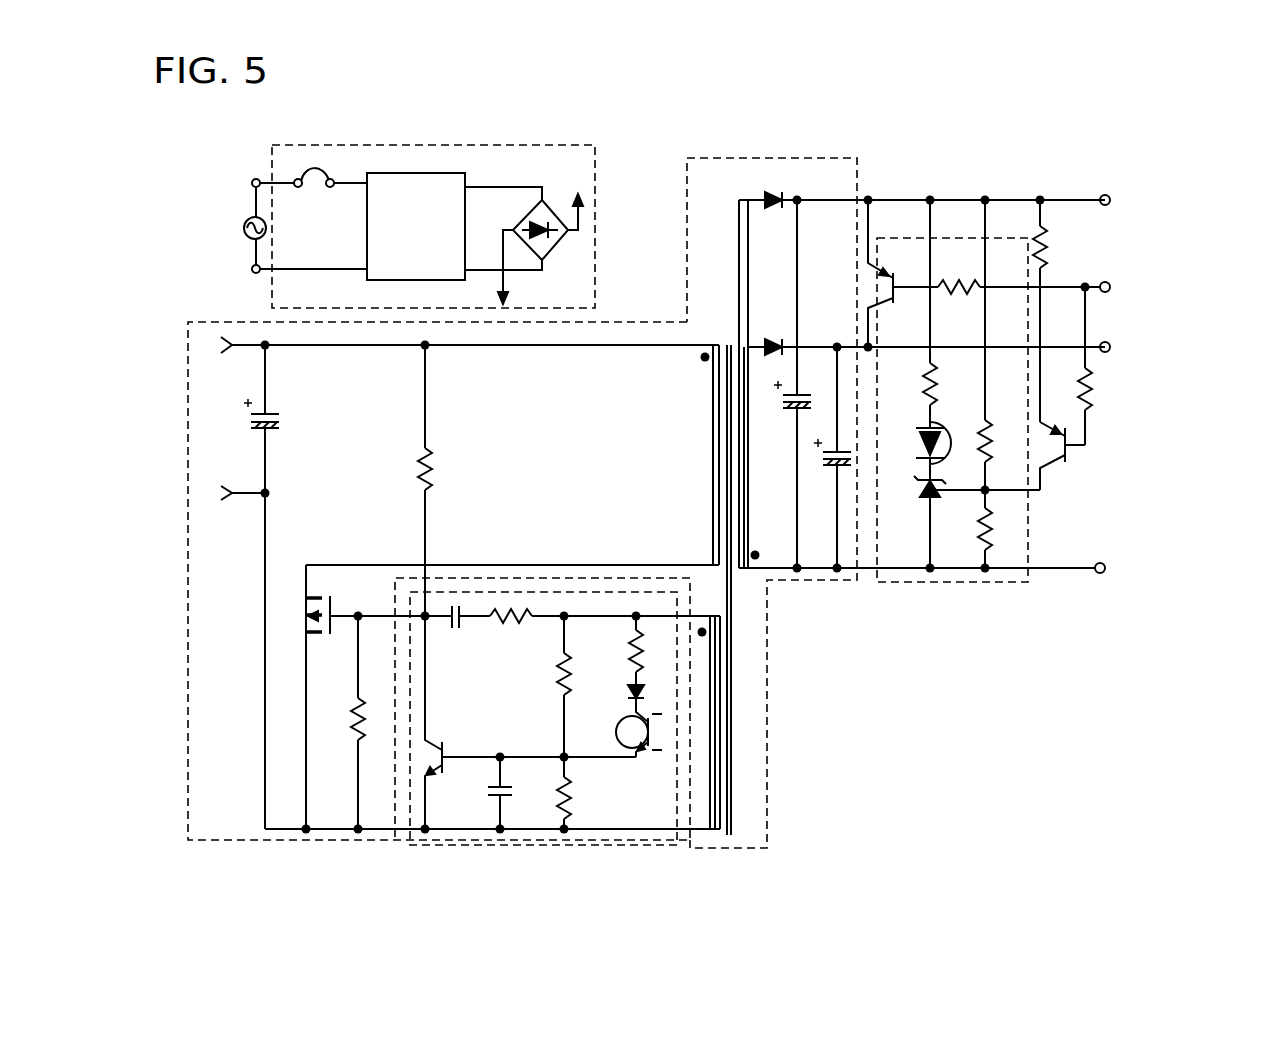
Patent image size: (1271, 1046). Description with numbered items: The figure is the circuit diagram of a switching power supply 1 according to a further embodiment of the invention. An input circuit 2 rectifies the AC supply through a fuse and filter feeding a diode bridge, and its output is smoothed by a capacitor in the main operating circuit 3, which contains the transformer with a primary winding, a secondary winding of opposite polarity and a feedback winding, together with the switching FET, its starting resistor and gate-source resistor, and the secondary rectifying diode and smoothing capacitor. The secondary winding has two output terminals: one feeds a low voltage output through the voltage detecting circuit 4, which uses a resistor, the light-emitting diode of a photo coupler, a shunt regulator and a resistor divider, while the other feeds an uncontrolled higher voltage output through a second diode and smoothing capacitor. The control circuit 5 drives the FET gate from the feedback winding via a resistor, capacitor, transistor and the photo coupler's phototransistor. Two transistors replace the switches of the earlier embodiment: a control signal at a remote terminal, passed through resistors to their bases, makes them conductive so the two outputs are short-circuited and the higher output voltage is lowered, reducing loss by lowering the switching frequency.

The switching power supply 1 is at (911, 175).
The input circuit 2 is at (595, 171).
The main operating circuit 3 is at (651, 322).
The voltage detecting circuit 4 is at (990, 584).
The control circuit 5 is at (637, 846).